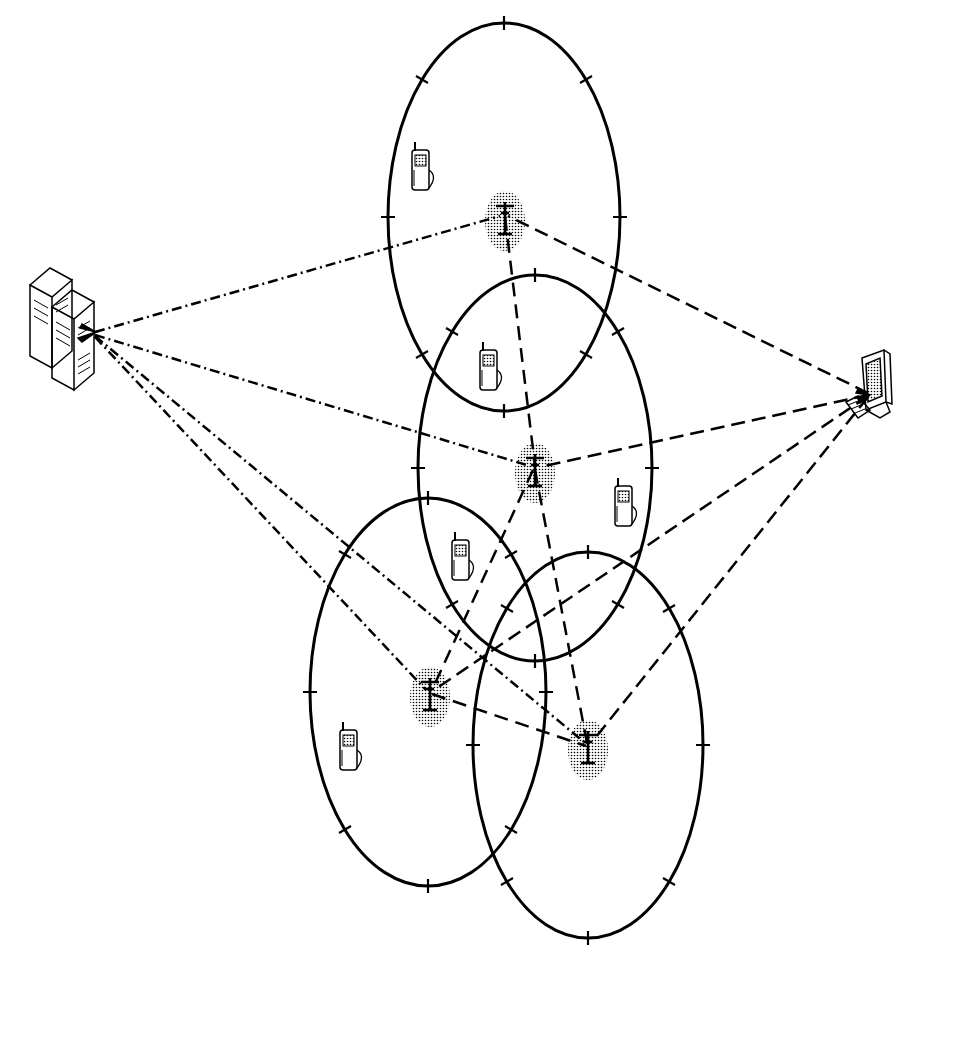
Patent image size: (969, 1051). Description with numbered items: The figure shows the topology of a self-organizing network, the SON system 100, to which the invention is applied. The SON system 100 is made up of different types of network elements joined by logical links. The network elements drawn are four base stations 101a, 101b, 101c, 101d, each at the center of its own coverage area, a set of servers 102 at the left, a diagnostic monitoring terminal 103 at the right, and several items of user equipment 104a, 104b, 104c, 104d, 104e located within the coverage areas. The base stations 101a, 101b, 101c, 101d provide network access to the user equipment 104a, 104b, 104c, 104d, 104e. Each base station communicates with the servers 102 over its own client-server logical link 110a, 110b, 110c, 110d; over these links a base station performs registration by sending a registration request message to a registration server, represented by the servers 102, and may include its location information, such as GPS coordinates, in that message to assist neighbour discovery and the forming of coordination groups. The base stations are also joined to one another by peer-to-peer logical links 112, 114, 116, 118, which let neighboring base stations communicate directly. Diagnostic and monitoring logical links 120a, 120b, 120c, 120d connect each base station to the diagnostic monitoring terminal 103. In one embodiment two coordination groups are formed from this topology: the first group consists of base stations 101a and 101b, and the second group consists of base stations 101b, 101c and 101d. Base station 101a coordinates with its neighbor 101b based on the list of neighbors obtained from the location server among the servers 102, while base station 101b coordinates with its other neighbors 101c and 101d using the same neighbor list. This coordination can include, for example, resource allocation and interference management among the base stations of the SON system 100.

The SON system 100 is at (263, 114).
The base station 101a is at (532, 200).
The base station 101b is at (550, 452).
The base station 101c is at (612, 758).
The base station 101d is at (406, 710).
The servers 102 is at (64, 272).
The diagnostic monitoring terminals 103 is at (866, 352).
The user equipment 104a is at (430, 154).
The user equipment 104b is at (482, 336).
The user equipment 104c is at (636, 514).
The user equipment 104d is at (452, 558).
The user equipment 104e is at (332, 762).
The client-server logical link 110a is at (238, 290).
The client-server logical link 110b is at (270, 392).
The client-server logical link 110c is at (273, 498).
The client-server logical link 110d is at (226, 490).
The peer-to-peer logical link 112 is at (524, 370).
The peer-to-peer logical link 114 is at (560, 556).
The peer-to-peer logical link 116 is at (494, 712).
The peer-to-peer logical link 118 is at (498, 536).
The diagnostic and monitoring logical link 120a is at (646, 282).
The diagnostic and monitoring logical link 120b is at (660, 436).
The diagnostic and monitoring logical link 120c is at (690, 518).
The diagnostic and monitoring logical link 120d is at (742, 560).